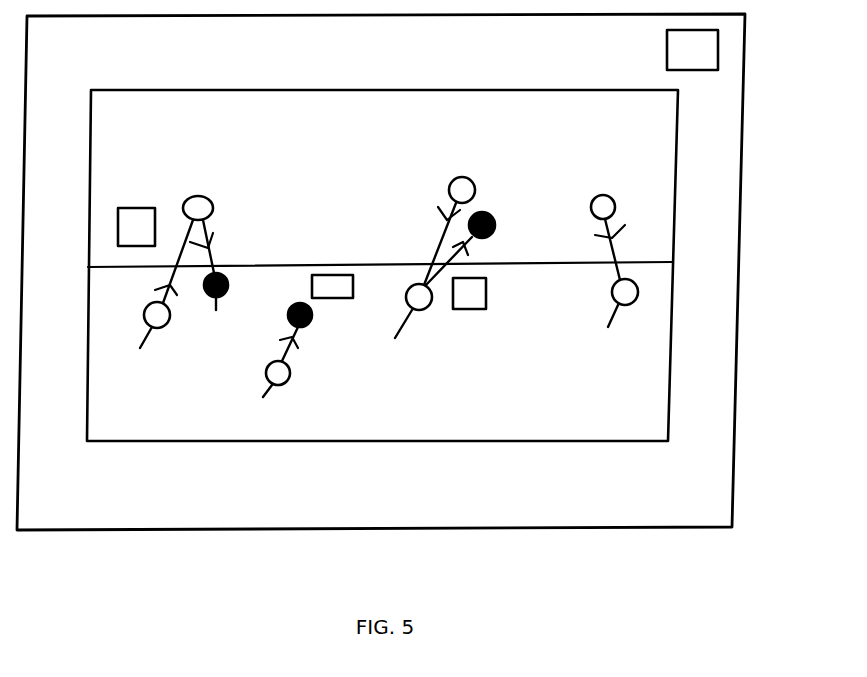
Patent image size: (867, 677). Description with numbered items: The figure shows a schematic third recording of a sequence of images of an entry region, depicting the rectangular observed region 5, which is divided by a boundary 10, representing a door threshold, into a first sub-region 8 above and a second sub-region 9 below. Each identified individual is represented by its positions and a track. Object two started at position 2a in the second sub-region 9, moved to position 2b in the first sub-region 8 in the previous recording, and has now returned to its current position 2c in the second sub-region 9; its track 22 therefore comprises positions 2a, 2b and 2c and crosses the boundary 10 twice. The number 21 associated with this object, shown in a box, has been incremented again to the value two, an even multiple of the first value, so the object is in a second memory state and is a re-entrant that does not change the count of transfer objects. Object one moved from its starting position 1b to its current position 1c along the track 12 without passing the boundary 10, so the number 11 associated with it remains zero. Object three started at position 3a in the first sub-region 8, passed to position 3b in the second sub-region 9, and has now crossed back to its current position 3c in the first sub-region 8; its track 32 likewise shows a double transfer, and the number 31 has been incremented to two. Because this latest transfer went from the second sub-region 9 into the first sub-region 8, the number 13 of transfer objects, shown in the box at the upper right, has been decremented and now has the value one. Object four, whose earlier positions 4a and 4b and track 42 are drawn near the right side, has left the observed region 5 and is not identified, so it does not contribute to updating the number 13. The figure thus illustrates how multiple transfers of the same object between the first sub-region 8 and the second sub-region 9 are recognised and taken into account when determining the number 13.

The observed region 5 is at (670, 368).
The first sub-region 8 is at (517, 133).
The second sub-region 9 is at (507, 397).
The boundary 10 is at (555, 264).
The number of transfer objects 13 is at (667, 50).
The number associated with object 2 21 is at (132, 208).
The position of object 2 in first recording 2a is at (159, 299).
The position of object 2 in second recording 2b is at (199, 196).
The current position of object 2 2c is at (214, 277).
The track of object 2 22 is at (213, 258).
The number associated with object 1 11 is at (312, 282).
The position of object 1 in second recording 1b is at (270, 373).
The current position of object 1 1c is at (311, 312).
The track of object 1 12 is at (285, 348).
The position of object 3 in first recording 3a is at (462, 177).
The position of object 3 in second recording 3b is at (420, 281).
The current position of object 3 3c is at (494, 219).
The track of object 3 32 is at (435, 243).
The number associated with object 3 31 is at (469, 309).
The position of object 4 in first recording 4a is at (608, 196).
The position of object 4 in second recording 4b is at (608, 289).
The track of object 4 42 is at (617, 250).